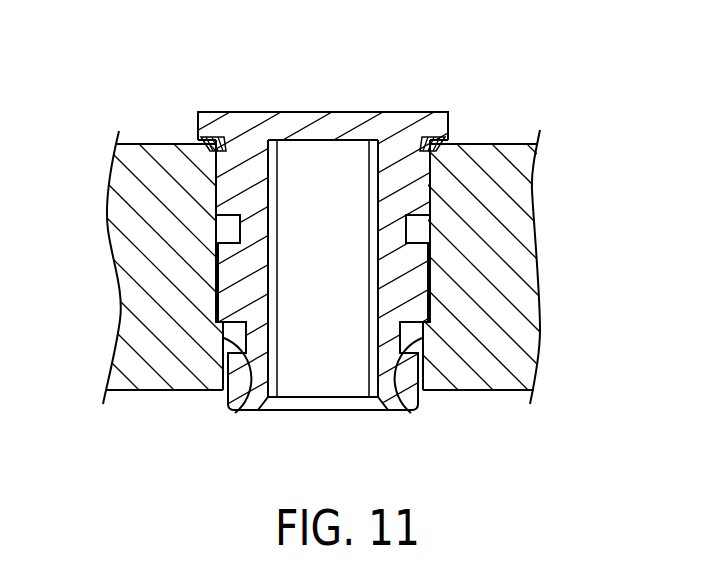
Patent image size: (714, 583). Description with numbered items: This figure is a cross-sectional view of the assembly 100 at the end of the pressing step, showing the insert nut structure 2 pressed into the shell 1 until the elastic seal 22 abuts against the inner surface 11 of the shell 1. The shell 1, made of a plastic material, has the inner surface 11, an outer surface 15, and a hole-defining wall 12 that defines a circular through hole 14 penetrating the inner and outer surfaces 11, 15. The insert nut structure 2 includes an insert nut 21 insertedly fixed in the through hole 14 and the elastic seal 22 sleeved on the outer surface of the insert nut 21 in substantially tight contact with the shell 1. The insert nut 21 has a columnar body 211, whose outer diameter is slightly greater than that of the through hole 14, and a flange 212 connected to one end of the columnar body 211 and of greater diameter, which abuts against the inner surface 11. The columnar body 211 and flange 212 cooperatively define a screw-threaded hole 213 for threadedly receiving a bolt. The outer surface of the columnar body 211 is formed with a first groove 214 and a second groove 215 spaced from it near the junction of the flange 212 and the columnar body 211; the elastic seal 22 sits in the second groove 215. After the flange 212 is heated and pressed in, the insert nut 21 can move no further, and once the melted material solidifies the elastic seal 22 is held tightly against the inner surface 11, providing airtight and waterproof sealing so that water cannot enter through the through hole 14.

The fastening assembly 100 is at (183, 72).
The shell 1 is at (483, 327).
The inner surface 11 is at (523, 142).
The hole-defining wall 12 is at (425, 433).
The through hole 14 is at (346, 420).
The outer surface 15 is at (165, 392).
The insert nut structure 2 is at (277, 92).
The insert nut 21 is at (433, 185).
The columnar body 211 is at (395, 265).
The flange 212 is at (440, 127).
The screw-threaded hole 213 is at (348, 152).
The first groove 214 is at (216, 232).
The second groove 215 is at (190, 140).
The elastic seal 22 is at (205, 139).